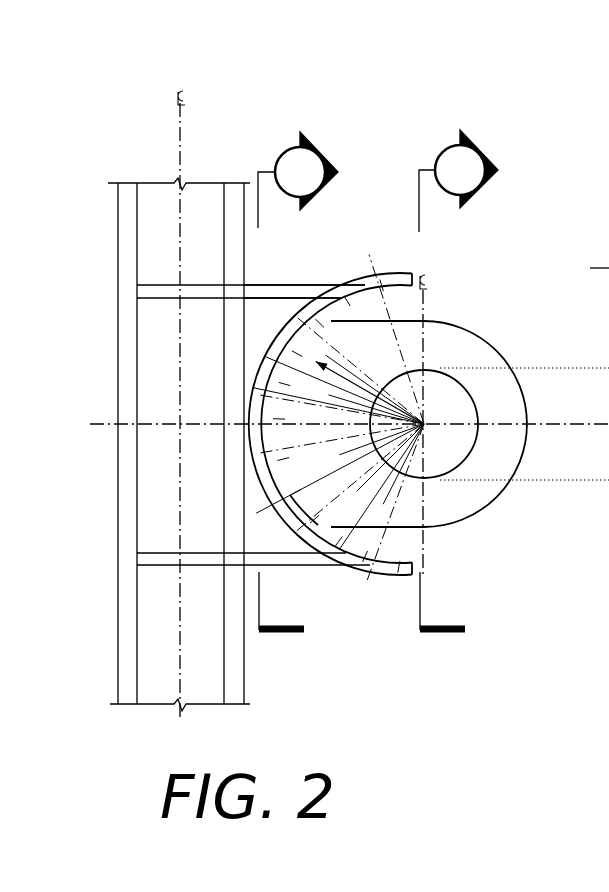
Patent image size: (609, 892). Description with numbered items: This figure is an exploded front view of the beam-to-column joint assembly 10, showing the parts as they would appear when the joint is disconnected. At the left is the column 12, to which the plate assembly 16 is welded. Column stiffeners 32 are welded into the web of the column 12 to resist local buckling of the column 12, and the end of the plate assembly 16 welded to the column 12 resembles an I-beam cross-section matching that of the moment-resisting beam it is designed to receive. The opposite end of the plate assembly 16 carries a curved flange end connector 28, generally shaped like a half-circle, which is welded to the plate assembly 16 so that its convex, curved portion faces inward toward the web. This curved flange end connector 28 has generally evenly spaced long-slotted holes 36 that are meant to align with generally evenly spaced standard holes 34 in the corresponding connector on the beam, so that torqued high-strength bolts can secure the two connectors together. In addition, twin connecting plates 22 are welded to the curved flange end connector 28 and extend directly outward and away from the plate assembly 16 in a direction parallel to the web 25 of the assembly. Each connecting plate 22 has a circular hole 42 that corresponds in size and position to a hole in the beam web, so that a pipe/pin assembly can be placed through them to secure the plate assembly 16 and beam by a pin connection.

The beam-to-column joint assembly 10 is at (380, 172).
The column 12 is at (118, 627).
The plate assembly 16 is at (262, 283).
The connecting plates 22 is at (460, 529).
The web 25 is at (282, 340).
The curved flange end connector 28 is at (345, 287).
The column stiffeners 32 is at (160, 287).
The standard holes 34 is at (599, 255).
The long-slotted holes 36 is at (305, 534).
The circular hole 42 is at (457, 402).